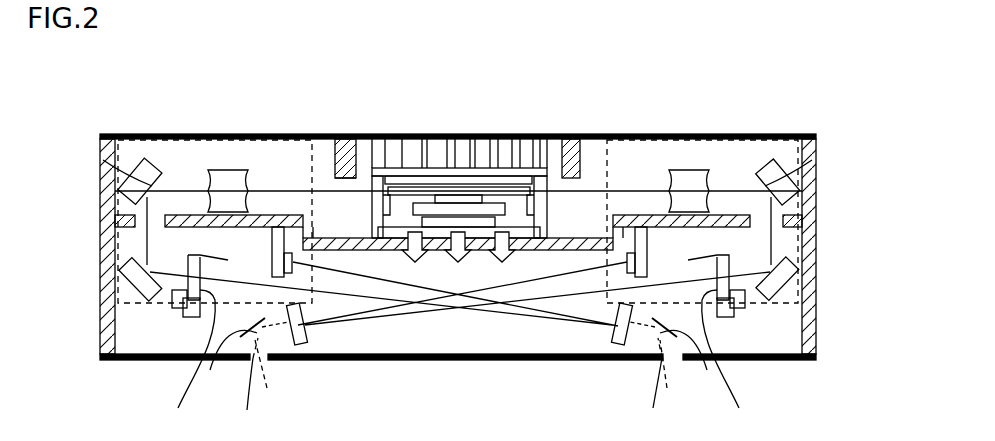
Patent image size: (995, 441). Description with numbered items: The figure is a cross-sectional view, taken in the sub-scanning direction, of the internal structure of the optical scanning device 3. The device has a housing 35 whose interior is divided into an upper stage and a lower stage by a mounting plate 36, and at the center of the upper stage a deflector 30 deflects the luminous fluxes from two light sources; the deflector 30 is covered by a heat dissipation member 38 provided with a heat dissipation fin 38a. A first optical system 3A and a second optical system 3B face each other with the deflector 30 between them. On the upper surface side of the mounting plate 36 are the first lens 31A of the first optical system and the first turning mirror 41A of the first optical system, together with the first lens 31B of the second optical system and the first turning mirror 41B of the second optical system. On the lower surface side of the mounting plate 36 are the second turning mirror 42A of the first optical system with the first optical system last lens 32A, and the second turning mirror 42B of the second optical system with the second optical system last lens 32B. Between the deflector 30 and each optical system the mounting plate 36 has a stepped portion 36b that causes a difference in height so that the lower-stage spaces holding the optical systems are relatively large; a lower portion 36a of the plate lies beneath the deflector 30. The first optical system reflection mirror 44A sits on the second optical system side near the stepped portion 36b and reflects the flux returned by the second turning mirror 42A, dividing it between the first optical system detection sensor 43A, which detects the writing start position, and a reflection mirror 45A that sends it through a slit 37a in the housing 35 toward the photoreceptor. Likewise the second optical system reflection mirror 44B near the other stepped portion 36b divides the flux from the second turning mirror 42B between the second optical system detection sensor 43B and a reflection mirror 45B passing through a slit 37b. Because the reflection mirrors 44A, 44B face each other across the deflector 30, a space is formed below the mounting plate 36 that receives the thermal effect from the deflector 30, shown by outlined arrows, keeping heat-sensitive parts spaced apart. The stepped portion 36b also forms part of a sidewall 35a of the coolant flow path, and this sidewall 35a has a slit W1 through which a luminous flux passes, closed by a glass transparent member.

The optical scanning device 3 is at (795, 103).
The first optical system 3A is at (640, 138).
The second optical system 3B is at (268, 138).
The deflector 30 is at (455, 193).
The first lens of the first optical system 31A is at (690, 177).
The first lens of the second optical system 31B is at (230, 177).
The first optical system last lens 32A is at (731, 363).
The second optical system last lens 32B is at (186, 363).
The housing 35 is at (753, 134).
The sidewall 35a is at (350, 180).
The mounting plate 36 is at (728, 212).
The holder bottom portion 36a is at (533, 250).
The stepped portion 36b is at (303, 240).
The slit 37a is at (247, 387).
The slit 37b is at (658, 387).
The heat dissipation member 38 is at (547, 168).
The heat dissipation fin 38a is at (503, 168).
The first turning mirror of the first optical system 41A is at (800, 165).
The first turning mirror of the second optical system 41B is at (117, 168).
The second turning mirror of the first optical system 42A is at (780, 282).
The second turning mirror of the second optical system 42B is at (138, 282).
The first optical system detection sensor 43A is at (630, 222).
The second optical system detection sensor 43B is at (292, 225).
The first optical system reflection mirror 44A is at (301, 346).
The second optical system reflection mirror 44B is at (615, 346).
The reflection mirror 45A is at (217, 342).
The reflection mirror 45B is at (699, 342).
The slit W1 is at (355, 182).